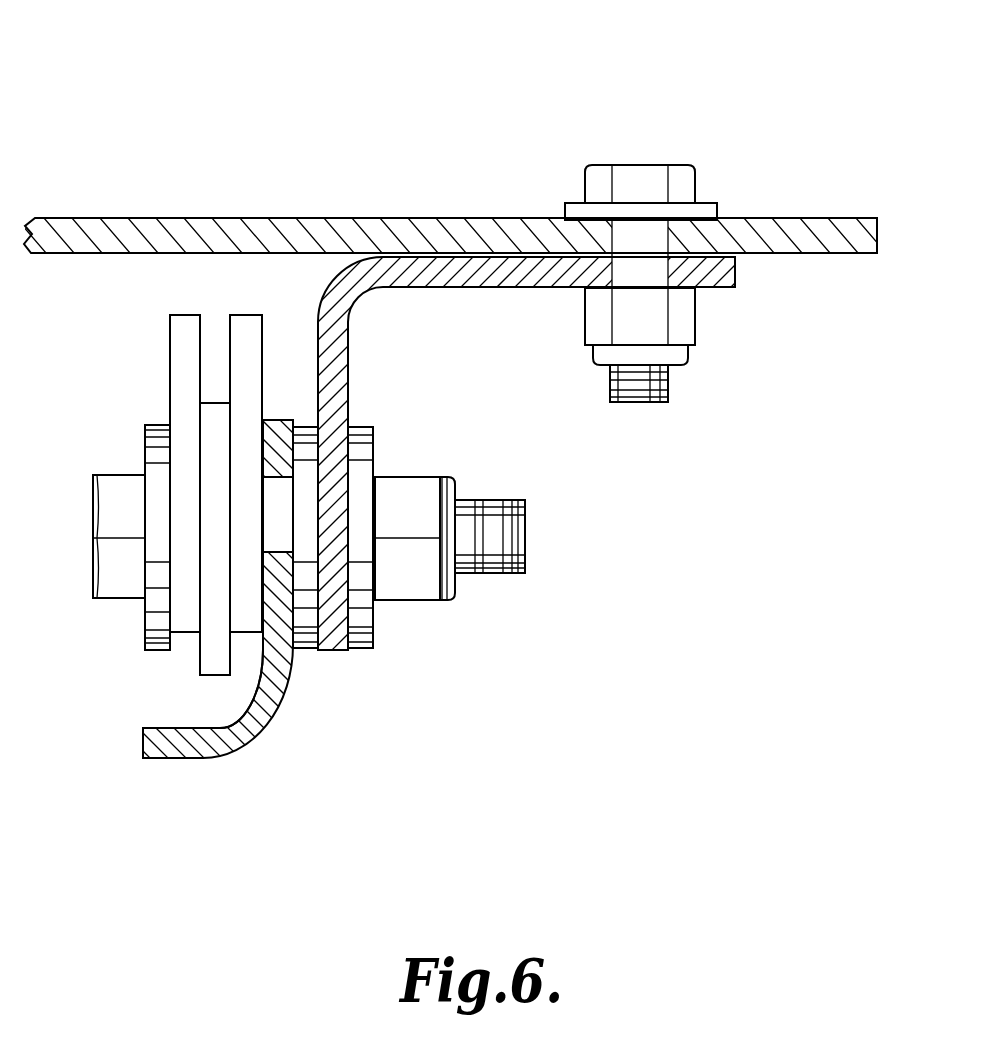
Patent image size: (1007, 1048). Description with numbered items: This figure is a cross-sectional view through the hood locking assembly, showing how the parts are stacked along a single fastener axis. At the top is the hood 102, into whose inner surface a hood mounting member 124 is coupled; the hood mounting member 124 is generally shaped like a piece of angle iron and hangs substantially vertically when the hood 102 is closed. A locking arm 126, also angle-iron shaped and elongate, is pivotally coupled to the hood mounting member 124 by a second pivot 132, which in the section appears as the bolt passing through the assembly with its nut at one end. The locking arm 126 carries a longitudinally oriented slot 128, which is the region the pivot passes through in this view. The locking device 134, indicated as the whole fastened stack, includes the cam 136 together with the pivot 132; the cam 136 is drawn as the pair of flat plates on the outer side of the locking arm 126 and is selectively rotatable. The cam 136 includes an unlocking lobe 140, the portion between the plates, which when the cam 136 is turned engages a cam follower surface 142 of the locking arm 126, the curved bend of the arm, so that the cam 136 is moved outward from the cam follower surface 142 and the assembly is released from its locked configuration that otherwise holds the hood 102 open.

The hood 102 is at (792, 247).
The hood mounting member 124 is at (480, 287).
The locking arm 126 is at (263, 730).
The slot 128 is at (283, 492).
The second pivot 132 is at (525, 532).
The locking device 134 is at (462, 167).
The cam 136 is at (173, 362).
The unlocking lobe 140 is at (202, 660).
The cam follower surface 142 is at (227, 723).